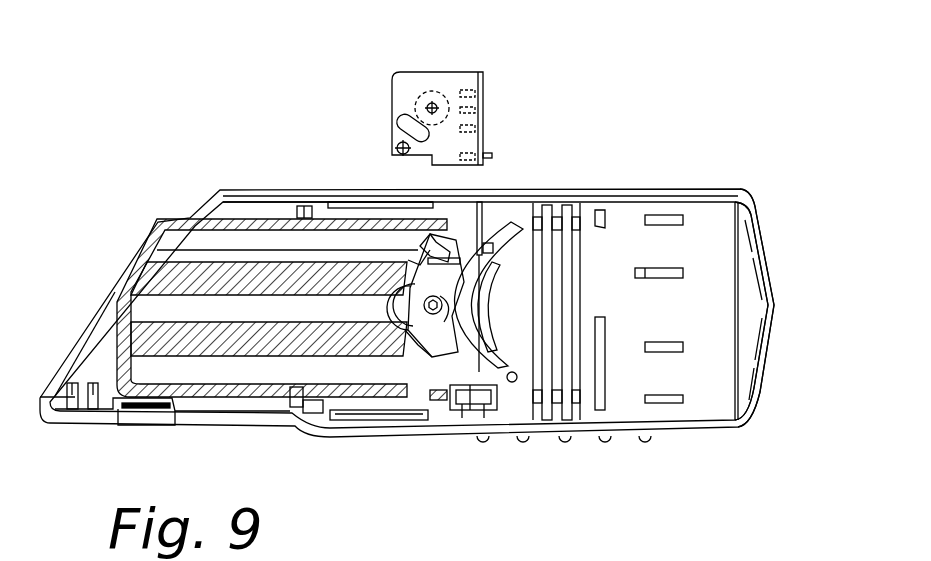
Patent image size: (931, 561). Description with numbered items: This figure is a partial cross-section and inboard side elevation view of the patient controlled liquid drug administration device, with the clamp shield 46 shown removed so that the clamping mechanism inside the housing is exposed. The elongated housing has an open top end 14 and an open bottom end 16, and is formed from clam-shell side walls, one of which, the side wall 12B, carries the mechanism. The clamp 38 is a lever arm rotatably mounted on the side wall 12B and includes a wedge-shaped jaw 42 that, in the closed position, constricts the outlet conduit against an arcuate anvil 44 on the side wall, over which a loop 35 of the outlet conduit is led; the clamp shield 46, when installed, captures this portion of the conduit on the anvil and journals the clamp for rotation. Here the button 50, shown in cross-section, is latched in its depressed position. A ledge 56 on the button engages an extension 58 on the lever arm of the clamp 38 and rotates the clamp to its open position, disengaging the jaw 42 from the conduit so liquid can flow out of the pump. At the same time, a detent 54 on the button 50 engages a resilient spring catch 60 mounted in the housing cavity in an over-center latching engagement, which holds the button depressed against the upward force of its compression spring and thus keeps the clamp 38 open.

The open top end 14 is at (190, 218).
The open bottom end 16 is at (762, 232).
The clam-shell side wall 12B is at (305, 190).
The button 50 is at (150, 230).
The extension 58 is at (484, 232).
The loop of the outlet conduit 35 is at (490, 258).
The arcuate anvil 44 is at (484, 303).
The clamp 38 is at (416, 323).
The ledge 56 is at (430, 252).
The resilient spring catch 60 is at (432, 395).
The detent 54 is at (414, 406).
The wedge-shaped jaw 42 is at (498, 385).
The clamp shield 46 is at (428, 78).